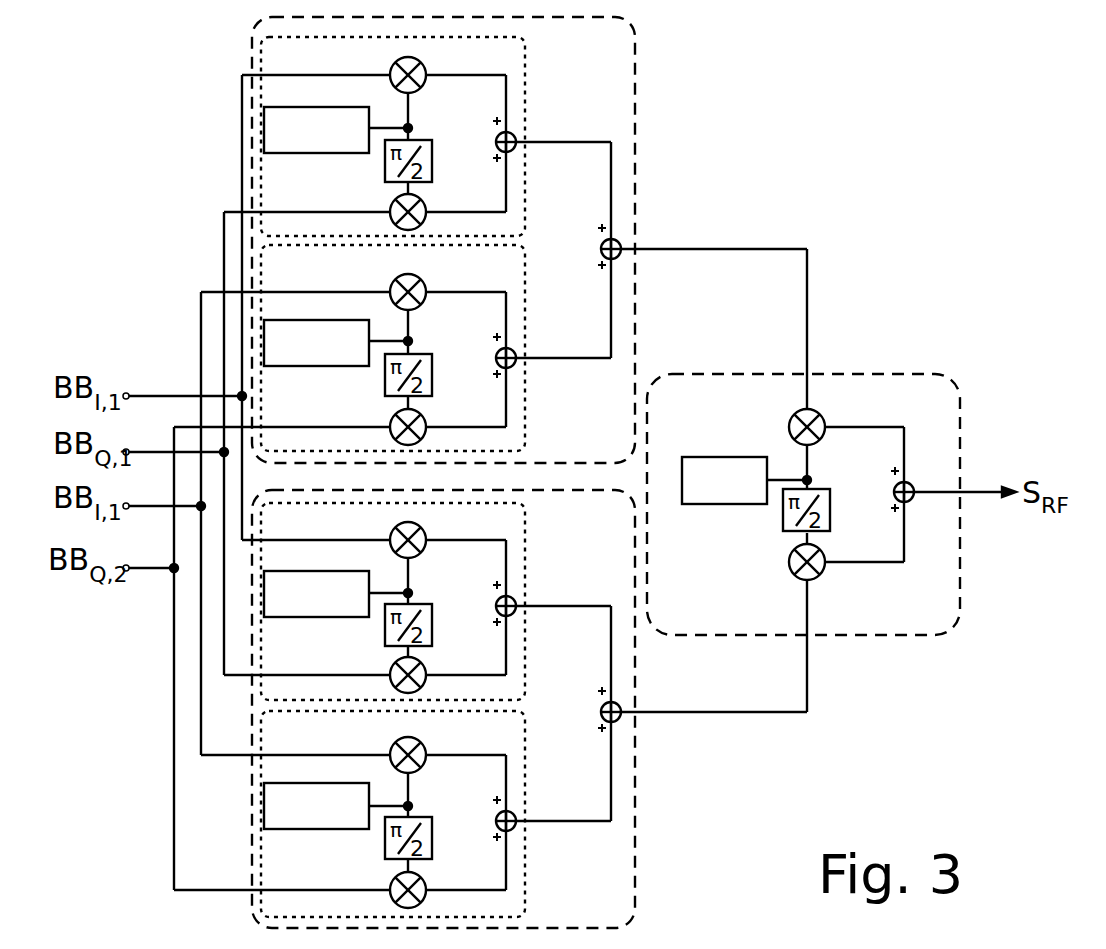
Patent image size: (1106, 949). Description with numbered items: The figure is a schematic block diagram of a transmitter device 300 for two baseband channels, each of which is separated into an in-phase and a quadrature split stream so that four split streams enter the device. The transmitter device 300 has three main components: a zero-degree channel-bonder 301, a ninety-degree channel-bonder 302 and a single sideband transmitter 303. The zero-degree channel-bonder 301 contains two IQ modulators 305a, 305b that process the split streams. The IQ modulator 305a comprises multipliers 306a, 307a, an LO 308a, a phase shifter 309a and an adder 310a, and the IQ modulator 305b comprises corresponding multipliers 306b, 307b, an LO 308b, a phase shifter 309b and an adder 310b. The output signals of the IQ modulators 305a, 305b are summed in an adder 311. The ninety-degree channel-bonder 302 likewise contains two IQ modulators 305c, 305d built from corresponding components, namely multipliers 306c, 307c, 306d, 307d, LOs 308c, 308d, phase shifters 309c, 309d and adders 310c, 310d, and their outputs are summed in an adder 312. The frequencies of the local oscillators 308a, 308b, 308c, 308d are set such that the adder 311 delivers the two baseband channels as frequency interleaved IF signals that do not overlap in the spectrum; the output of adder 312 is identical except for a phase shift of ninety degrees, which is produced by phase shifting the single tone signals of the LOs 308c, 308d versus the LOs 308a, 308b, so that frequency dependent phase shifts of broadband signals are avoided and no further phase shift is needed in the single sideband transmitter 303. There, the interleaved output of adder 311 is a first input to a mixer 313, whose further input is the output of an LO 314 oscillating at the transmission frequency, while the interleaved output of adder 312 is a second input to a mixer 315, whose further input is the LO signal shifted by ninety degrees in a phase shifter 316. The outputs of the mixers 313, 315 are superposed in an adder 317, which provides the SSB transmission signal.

The transmitter device 300 is at (763, 135).
The 0°-channel-bonder 301 is at (252, 50).
The 90°-channel-bonder 302 is at (252, 900).
The single sideband transmitter 303 is at (940, 378).
The IQ modulator 305a is at (527, 75).
The IQ modulator 305b is at (527, 265).
The IQ modulator 305c is at (527, 550).
The IQ modulator 305d is at (527, 808).
The multiplier 306a is at (391, 70).
The multiplier 306b is at (391, 284).
The multiplier 306c is at (391, 534).
The multiplier 306d is at (391, 749).
The multiplier 307a is at (391, 204).
The multiplier 307b is at (391, 420).
The multiplier 307c is at (391, 668).
The multiplier 307d is at (391, 882).
The LO 308a is at (264, 107).
The LO 308b is at (264, 325).
The LO 308c is at (264, 606).
The LO 308d is at (264, 800).
The phase shifter 309a is at (432, 148).
The phase shifter 309b is at (432, 366).
The phase shifter 309c is at (432, 614).
The phase shifter 309d is at (432, 828).
The adder 310a is at (514, 134).
The adder 310b is at (514, 350).
The adder 310c is at (514, 614).
The adder 310d is at (514, 829).
The adder 311 is at (619, 256).
The adder 312 is at (619, 719).
The mixer 313 is at (790, 424).
The LO 314 is at (723, 505).
The mixer 315 is at (791, 573).
The phase shifter 316 is at (830, 513).
The adder 317 is at (909, 501).